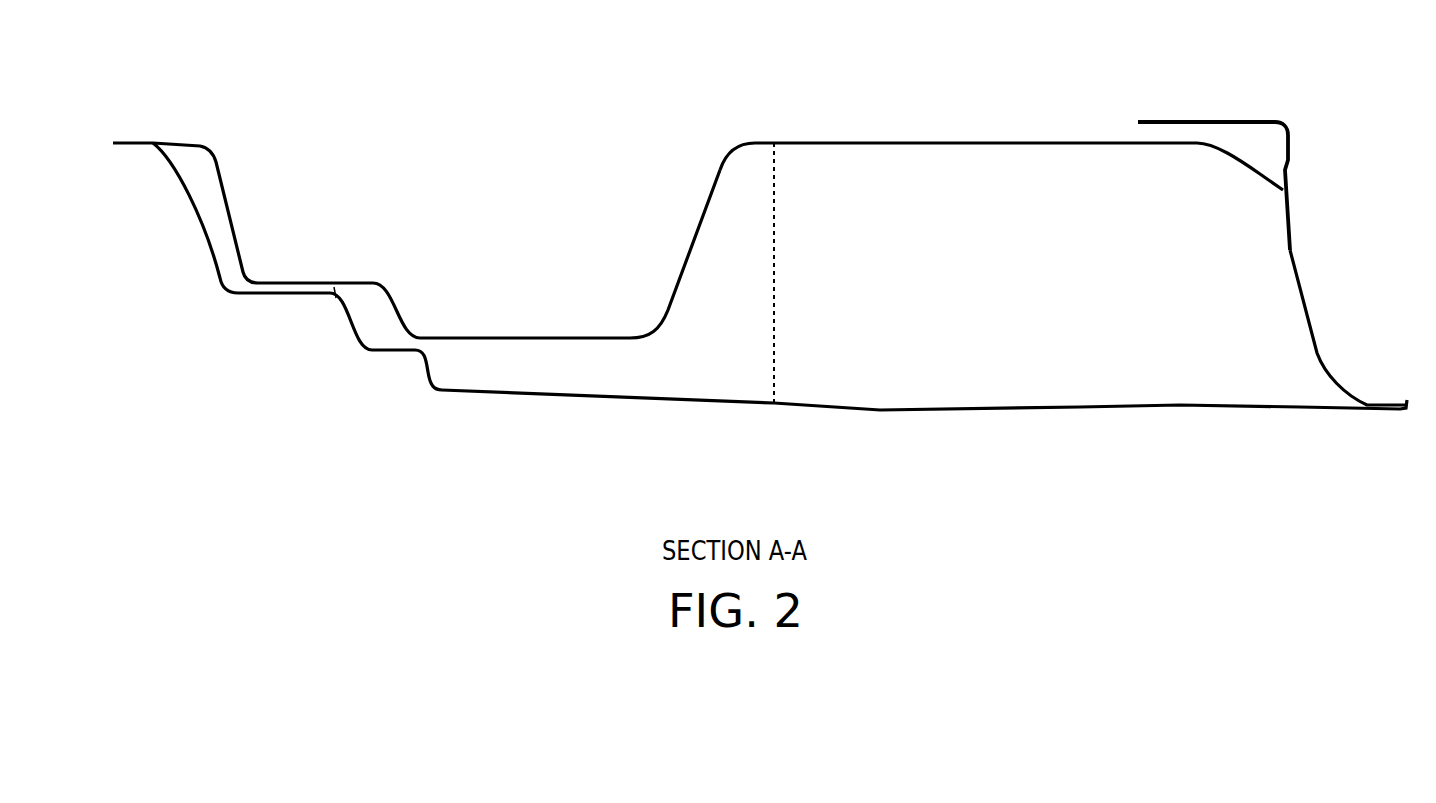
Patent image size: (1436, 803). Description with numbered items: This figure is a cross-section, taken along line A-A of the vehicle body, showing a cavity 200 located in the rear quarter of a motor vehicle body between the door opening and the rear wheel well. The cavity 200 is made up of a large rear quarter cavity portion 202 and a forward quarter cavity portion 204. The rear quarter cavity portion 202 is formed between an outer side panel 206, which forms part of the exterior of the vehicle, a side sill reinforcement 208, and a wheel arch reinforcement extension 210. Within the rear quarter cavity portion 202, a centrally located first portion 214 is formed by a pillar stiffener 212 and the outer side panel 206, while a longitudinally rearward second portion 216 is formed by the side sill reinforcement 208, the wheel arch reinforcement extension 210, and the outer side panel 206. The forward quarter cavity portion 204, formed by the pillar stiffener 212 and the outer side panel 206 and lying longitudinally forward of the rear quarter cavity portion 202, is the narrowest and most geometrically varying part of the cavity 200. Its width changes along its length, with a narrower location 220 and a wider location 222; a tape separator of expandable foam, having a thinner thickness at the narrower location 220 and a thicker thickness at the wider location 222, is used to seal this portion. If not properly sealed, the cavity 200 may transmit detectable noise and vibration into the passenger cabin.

The cavity 200 is at (829, 312).
The rear quarter cavity portion 202 is at (1113, 219).
The forward quarter cavity portion 204 is at (202, 203).
The outer side panel 206 is at (1128, 407).
The side sill reinforcement 208 is at (918, 142).
The wheel arch reinforcement extension 210 is at (1318, 338).
The pillar stiffener 212 is at (218, 173).
The first portion 214 is at (605, 380).
The second portion 216 is at (1302, 392).
The narrower location 220 is at (150, 152).
The wider location 222 is at (208, 222).